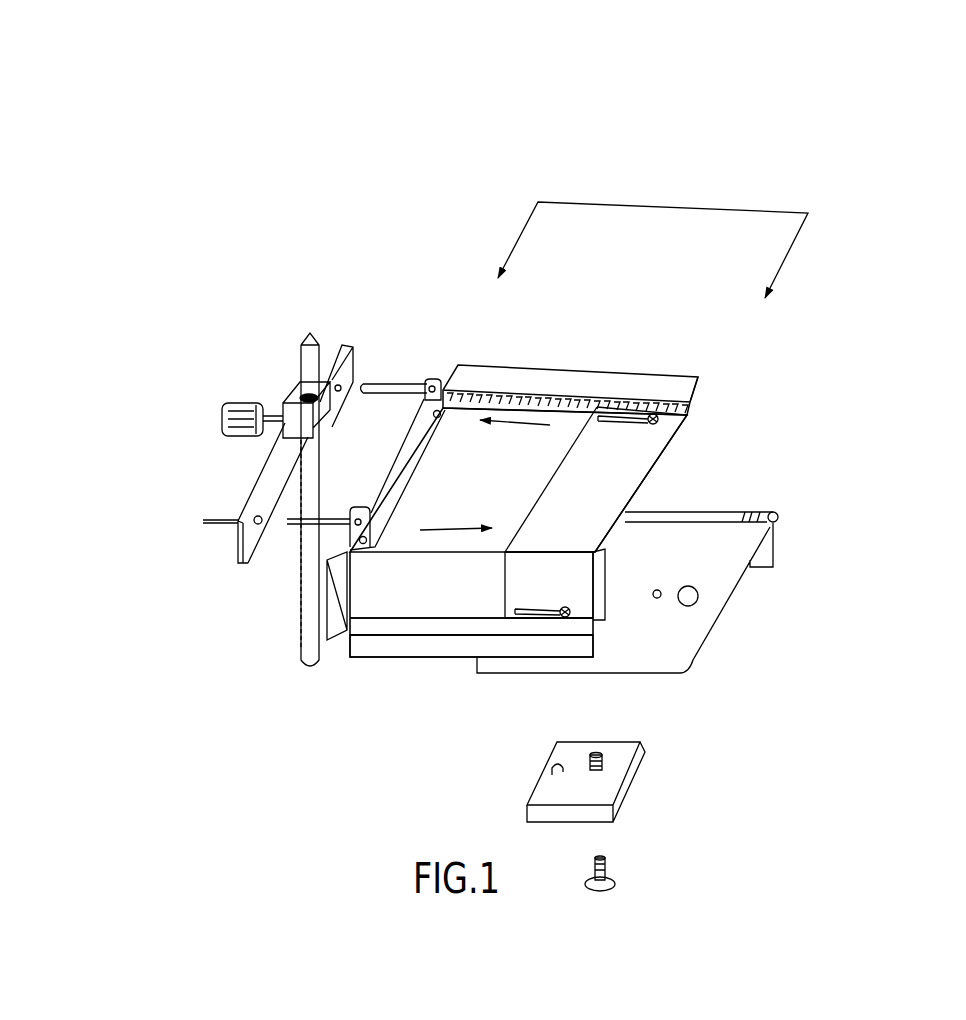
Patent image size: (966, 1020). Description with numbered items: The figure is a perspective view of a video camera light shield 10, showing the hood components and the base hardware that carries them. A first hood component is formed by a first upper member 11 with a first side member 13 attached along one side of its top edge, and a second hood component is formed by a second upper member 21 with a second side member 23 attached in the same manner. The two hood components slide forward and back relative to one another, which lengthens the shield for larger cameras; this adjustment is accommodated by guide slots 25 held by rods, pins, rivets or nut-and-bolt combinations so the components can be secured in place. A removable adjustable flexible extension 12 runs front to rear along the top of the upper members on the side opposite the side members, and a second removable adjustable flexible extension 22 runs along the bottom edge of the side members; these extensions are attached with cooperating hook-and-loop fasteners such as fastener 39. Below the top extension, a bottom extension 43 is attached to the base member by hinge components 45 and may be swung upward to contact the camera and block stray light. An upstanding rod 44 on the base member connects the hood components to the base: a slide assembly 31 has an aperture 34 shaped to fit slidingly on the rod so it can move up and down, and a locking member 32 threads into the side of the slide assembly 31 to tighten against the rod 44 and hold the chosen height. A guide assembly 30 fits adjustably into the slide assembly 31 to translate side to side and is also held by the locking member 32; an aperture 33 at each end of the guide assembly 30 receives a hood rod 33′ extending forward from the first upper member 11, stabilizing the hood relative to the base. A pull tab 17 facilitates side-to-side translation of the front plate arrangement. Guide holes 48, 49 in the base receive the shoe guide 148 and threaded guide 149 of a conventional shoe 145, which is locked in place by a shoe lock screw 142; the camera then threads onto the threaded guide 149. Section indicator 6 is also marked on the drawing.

The video camera light shield 10 is at (487, 336).
The section line 6- 6 is at (660, 230).
The first upper member 11 is at (490, 487).
The second upper member 21 is at (600, 510).
The first side member 13 is at (440, 607).
The second side member 23 is at (563, 606).
The removable adjustable flexible extension 12 is at (580, 346).
The guide slots 25 is at (601, 413).
The hook-and-loop fastener 39 is at (545, 569).
The removable adjustable flexible extension 22 is at (387, 709).
The pull tab 17 is at (246, 623).
The upstanding rod 44 is at (232, 499).
The slide assembly 31 is at (207, 369).
The locking member 32 is at (189, 426).
The guide assembly 30 is at (229, 493).
The aperture 33 is at (381, 331).
The hood rod 33′ is at (431, 417).
The aperture 34 is at (244, 302).
The hinge components 45 is at (775, 458).
The bottom extension 43 is at (711, 598).
The guide hole 48 is at (648, 601).
The guide hole 49 is at (730, 625).
The shoe 145 is at (531, 785).
The shoe guide 148 is at (523, 729).
The threaded guide 149 is at (688, 743).
The shoe lock screw 142 is at (656, 896).